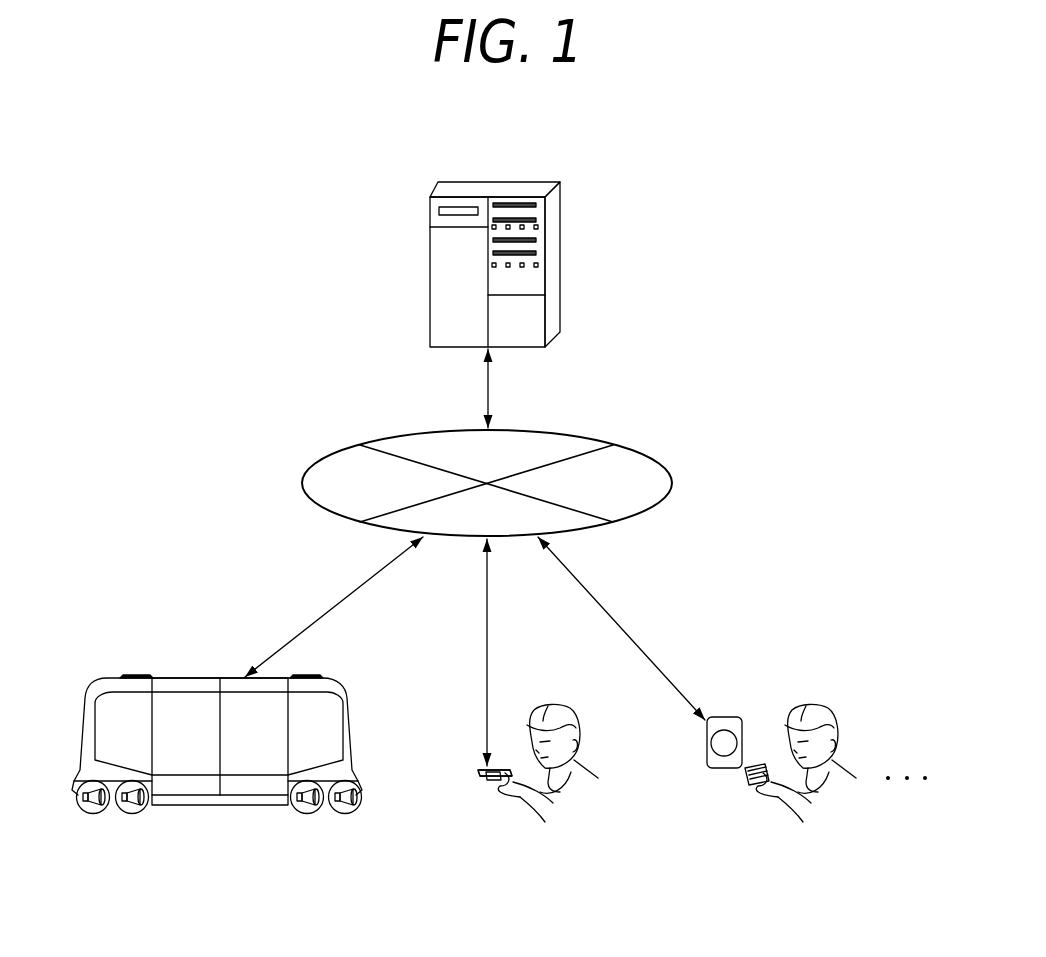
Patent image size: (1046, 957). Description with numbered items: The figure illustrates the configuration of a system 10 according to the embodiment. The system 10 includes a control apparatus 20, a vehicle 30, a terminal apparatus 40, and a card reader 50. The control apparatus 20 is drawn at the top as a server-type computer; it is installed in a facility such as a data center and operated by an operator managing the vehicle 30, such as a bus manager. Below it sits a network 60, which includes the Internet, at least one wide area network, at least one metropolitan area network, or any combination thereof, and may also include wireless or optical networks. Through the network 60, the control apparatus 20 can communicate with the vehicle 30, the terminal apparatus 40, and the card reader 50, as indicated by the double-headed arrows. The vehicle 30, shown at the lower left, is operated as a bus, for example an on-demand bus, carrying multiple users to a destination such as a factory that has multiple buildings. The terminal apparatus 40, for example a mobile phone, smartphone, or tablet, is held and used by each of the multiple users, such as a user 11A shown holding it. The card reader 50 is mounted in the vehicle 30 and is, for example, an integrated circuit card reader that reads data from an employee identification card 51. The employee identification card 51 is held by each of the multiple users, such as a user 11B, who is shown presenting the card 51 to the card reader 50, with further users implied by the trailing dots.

The system 10 is at (717, 324).
The control apparatus 20 is at (556, 262).
The network 60 is at (672, 483).
The vehicle 30 is at (228, 806).
The user 11A is at (577, 722).
The user 11B is at (832, 723).
The terminal apparatus 40 is at (478, 774).
The card reader 50 is at (722, 717).
The employee identification card 51 is at (743, 777).